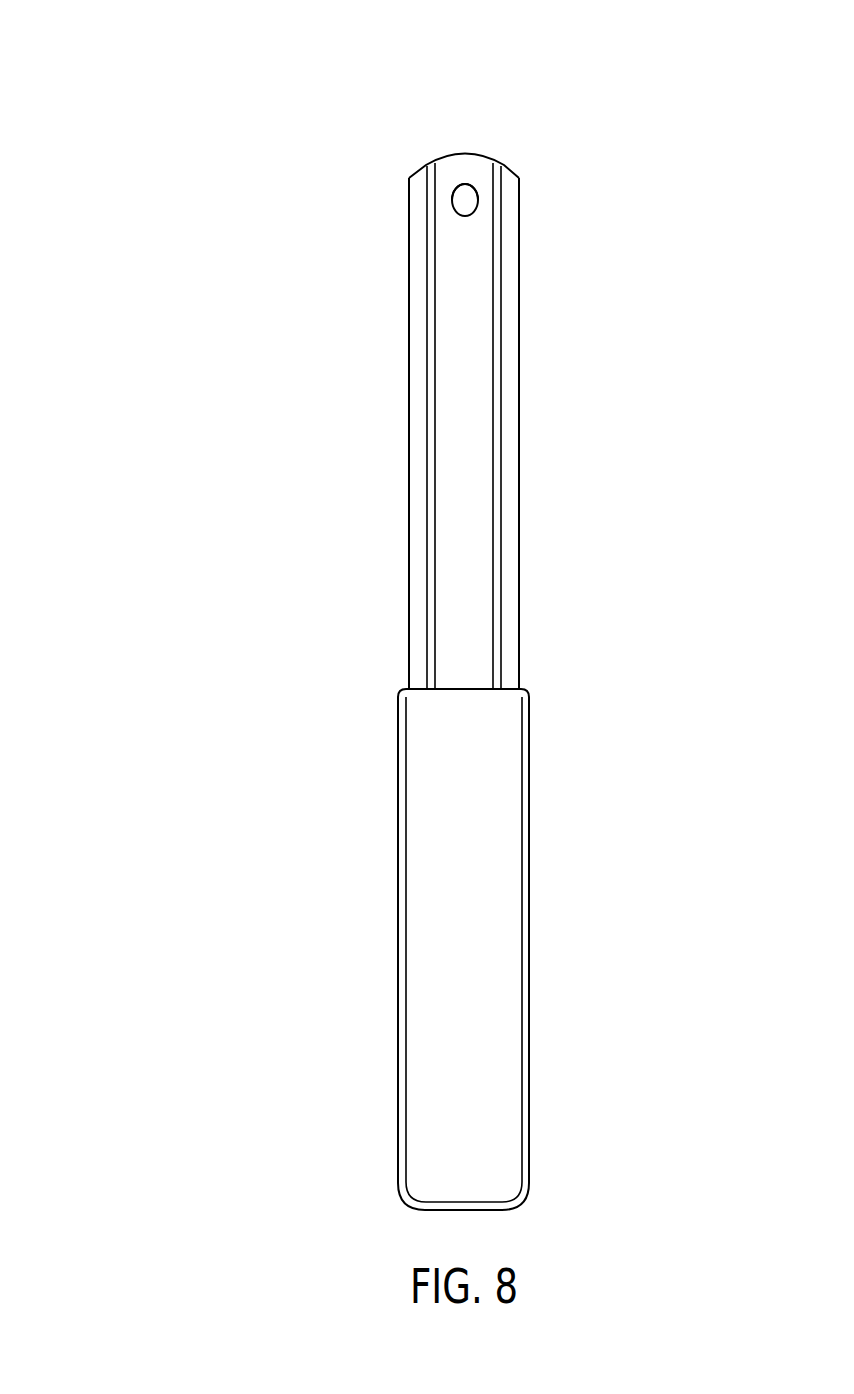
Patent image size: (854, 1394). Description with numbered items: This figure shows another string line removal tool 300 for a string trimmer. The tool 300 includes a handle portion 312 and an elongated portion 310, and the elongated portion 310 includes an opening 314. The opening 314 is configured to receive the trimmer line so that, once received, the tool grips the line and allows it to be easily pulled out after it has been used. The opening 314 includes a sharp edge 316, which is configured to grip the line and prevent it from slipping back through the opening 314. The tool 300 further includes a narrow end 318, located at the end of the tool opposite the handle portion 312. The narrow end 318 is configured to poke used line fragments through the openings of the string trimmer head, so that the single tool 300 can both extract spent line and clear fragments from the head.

The string line removal tool 300 is at (190, 428).
The elongated portion 310 is at (485, 938).
The handle portion 312 is at (470, 392).
The opening 314 is at (465, 207).
The sharp edge 316 is at (464, 182).
The narrow end 318 is at (480, 153).